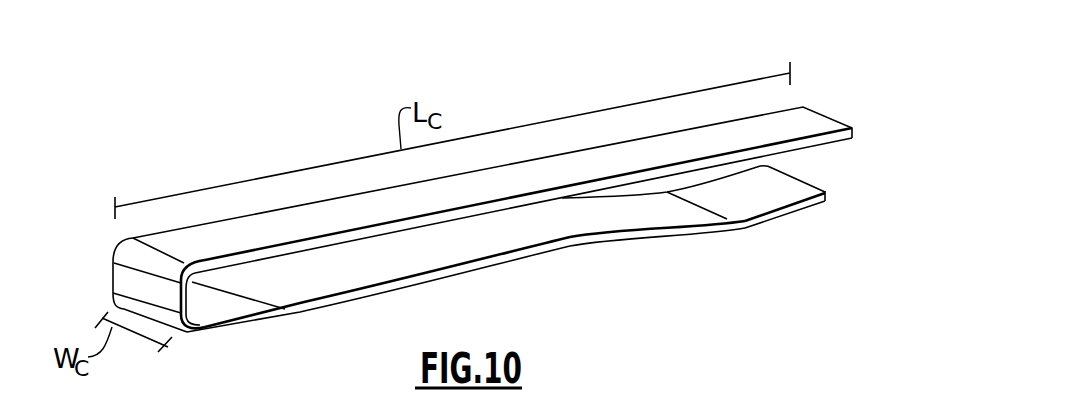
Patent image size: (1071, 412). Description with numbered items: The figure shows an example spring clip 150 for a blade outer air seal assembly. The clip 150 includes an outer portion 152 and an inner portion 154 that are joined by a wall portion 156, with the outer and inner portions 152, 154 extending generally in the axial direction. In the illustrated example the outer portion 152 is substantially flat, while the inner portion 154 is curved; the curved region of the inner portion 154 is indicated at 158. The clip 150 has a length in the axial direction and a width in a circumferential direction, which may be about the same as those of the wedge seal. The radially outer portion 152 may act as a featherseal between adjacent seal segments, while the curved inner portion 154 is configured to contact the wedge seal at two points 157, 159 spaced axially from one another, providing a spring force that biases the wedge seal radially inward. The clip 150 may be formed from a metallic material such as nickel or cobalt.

The spring clip 150 is at (859, 86).
The outer portion 152 is at (763, 121).
The inner portion 154 is at (794, 213).
The wall portion 156 is at (130, 283).
The contact point 157 is at (249, 322).
The curved portion of lower arm 158 is at (537, 250).
The contact point 159 is at (765, 227).